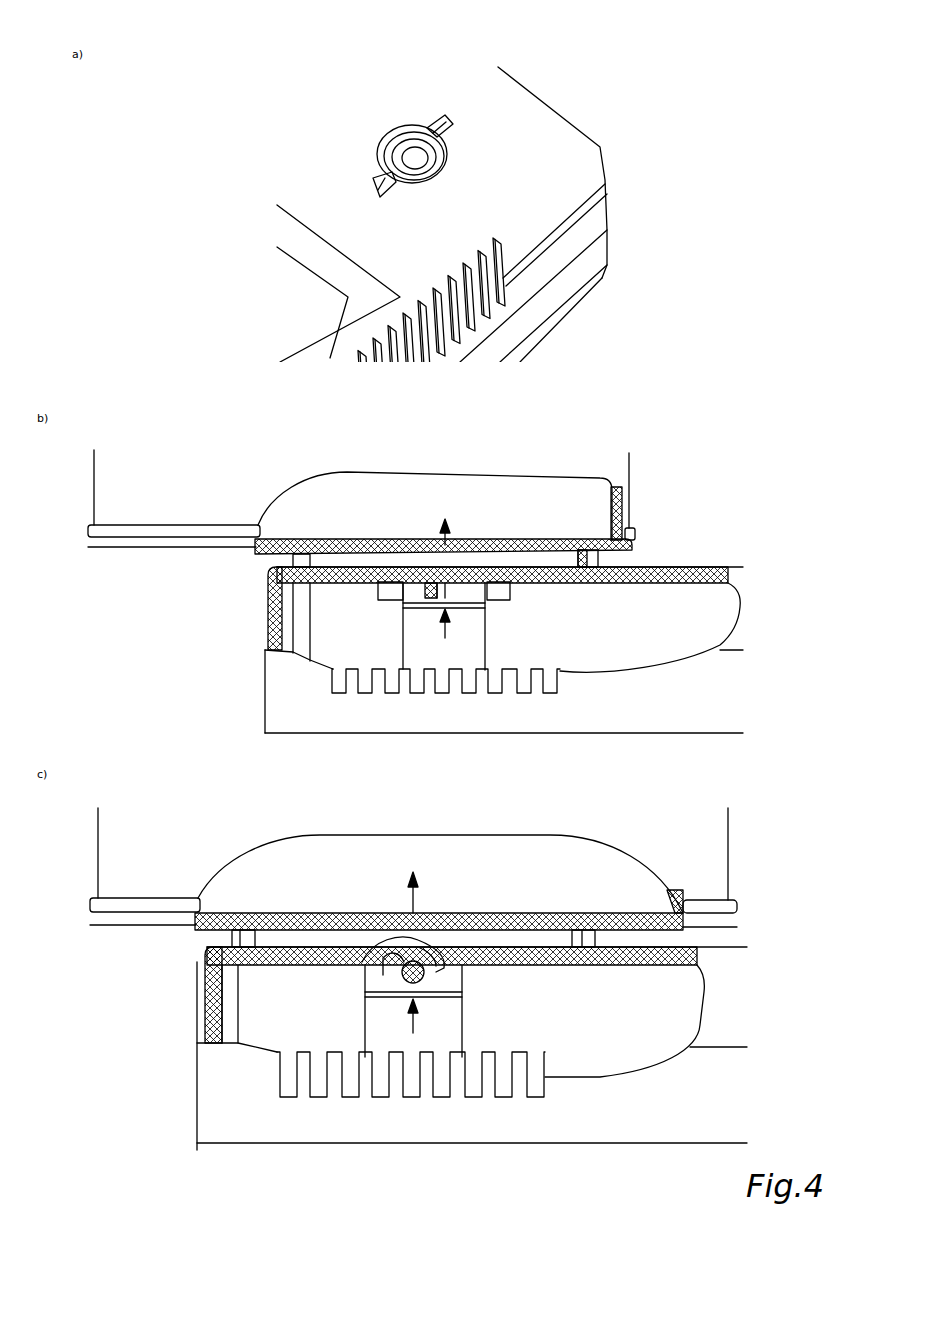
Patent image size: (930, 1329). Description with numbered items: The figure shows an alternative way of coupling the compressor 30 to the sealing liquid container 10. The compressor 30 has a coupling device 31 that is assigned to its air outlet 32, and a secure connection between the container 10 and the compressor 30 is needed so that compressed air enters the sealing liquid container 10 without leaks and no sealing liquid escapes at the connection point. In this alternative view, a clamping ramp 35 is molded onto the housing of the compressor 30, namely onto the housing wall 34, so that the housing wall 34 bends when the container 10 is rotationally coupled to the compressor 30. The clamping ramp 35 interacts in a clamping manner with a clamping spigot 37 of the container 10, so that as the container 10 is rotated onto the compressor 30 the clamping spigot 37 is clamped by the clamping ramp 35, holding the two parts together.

The sealing liquid container 10 is at (98, 847).
The compressor 30 is at (170, 1115).
The coupling device 31 is at (423, 127).
The air outlet 32 is at (415, 157).
The housing wall 34 is at (433, 577).
The clamping ramp 35 is at (483, 583).
The clamping spigot 37 is at (380, 593).